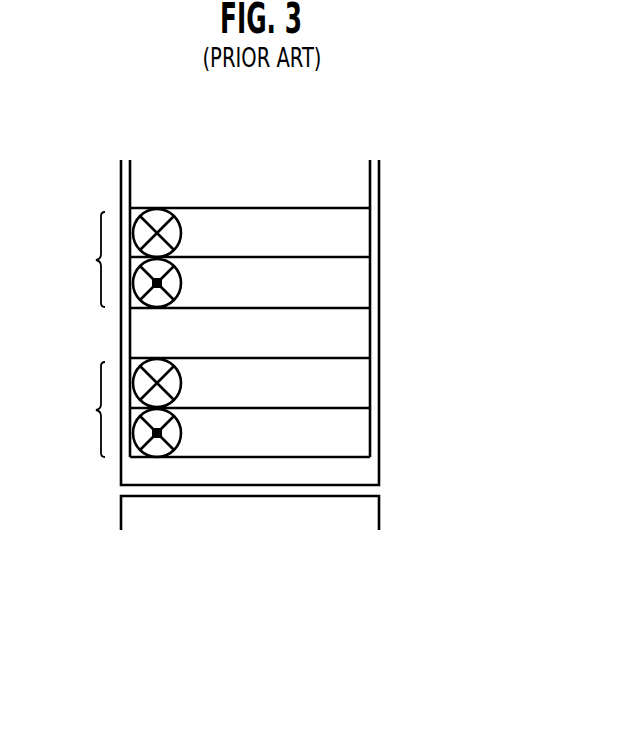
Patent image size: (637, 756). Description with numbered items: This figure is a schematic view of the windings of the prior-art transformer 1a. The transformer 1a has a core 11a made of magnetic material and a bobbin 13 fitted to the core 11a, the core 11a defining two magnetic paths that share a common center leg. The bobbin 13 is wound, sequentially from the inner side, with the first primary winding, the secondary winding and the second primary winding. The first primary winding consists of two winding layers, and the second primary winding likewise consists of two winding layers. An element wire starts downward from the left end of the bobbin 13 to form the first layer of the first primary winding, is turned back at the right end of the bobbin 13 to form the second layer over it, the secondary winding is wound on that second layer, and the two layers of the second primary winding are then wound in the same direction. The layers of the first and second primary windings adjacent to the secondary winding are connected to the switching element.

The transformer 1a is at (211, 275).
The bobbin 13 is at (297, 316).
The core 11a is at (210, 498).